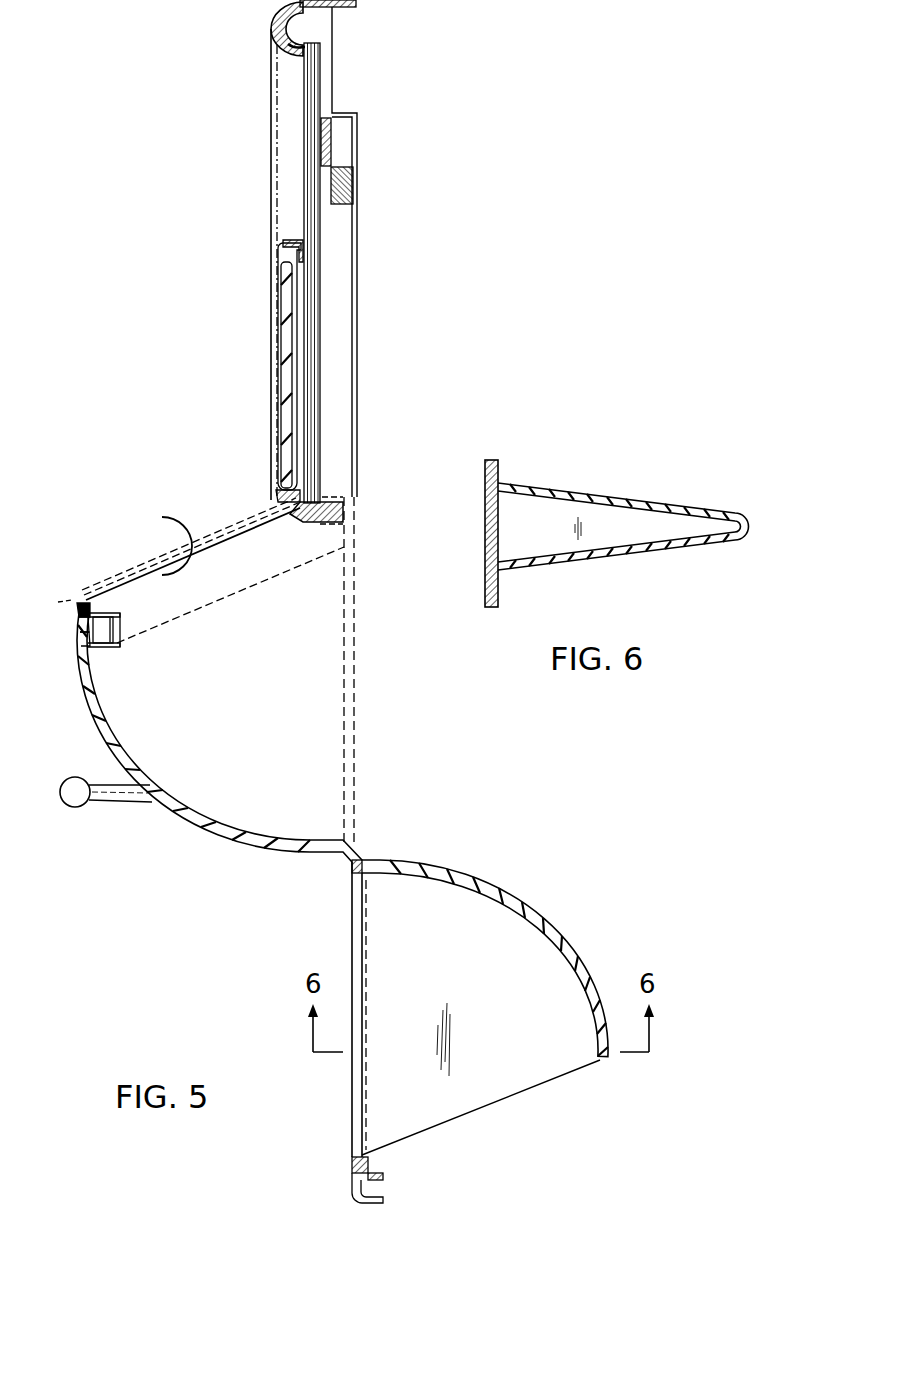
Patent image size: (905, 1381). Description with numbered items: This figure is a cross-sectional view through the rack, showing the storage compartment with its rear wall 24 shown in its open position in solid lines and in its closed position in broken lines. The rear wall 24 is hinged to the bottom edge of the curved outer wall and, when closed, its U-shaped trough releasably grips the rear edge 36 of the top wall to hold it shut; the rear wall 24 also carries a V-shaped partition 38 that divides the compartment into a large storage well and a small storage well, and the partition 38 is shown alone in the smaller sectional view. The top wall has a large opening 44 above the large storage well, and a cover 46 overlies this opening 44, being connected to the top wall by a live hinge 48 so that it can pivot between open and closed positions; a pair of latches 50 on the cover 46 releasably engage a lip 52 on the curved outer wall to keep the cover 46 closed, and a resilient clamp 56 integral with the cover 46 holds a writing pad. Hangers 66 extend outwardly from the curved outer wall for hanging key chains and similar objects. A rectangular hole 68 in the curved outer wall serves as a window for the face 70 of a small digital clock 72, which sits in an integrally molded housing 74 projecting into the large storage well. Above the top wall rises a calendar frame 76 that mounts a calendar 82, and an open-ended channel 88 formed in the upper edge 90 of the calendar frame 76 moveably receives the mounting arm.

In FIG. 5, the rear wall 24 is at (350, 716).
In FIG. 5, the rear edge 36 is at (355, 500).
In FIG. 5, the V-shaped partition 38 is at (480, 930).
In FIG. 6, the V-shaped partition 38 is at (620, 505).
In FIG. 5, the large opening 44 is at (193, 554).
In FIG. 5, the cover 46 is at (280, 371).
In FIG. 5, the live hinge 48 is at (290, 503).
In FIG. 5, the latches 50 is at (276, 280).
In FIG. 5, the lip 52 is at (86, 604).
In FIG. 5, the resilient clamp 56 is at (307, 253).
In FIG. 5, the hangers 66 is at (75, 807).
In FIG. 5, the rectangular hole 68 is at (77, 622).
In FIG. 5, the face 70 is at (82, 638).
In FIG. 5, the digital clock 72 is at (105, 650).
In FIG. 5, the housing 74 is at (120, 640).
In FIG. 5, the calendar frame 76 is at (286, 113).
In FIG. 5, the calendar 82 is at (310, 88).
In FIG. 5, the open-ended channel 88 is at (308, 35).
In FIG. 5, the upper edge 90 is at (300, 58).